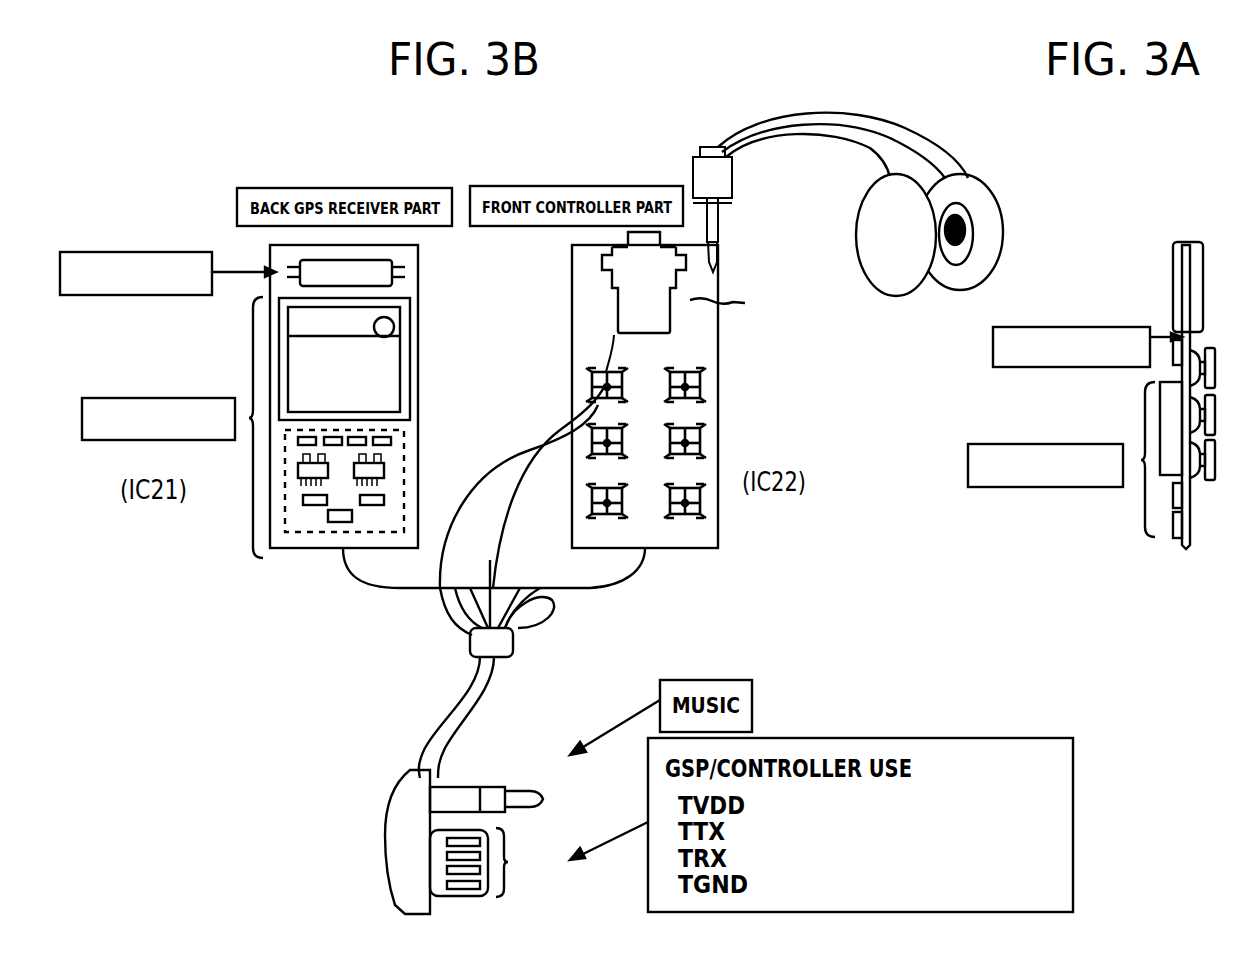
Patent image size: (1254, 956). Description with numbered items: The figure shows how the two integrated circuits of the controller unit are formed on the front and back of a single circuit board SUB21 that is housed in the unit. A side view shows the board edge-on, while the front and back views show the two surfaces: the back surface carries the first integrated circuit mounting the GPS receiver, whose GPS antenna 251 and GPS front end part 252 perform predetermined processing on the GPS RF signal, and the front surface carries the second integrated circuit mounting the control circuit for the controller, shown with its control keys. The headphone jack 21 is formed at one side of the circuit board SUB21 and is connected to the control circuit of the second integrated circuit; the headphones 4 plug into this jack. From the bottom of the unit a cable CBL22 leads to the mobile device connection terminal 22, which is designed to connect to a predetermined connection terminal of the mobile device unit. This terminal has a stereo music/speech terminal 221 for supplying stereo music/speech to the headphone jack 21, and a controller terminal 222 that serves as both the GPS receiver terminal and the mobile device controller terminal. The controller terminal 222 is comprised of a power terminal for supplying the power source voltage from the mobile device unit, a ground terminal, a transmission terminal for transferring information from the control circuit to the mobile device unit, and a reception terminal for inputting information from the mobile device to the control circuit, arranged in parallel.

In FIG. 3B, the headphones 4 is at (956, 296).
In FIG. 3B, the headphone jack 21 is at (677, 347).
In FIG. 3A, the headphone jack 21 is at (1173, 270).
In FIG. 3B, the mobile device connection terminal 22 is at (411, 826).
In FIG. 3B, the stereo music/speech terminal 221 is at (472, 787).
In FIG. 3B, the controller terminal 222 is at (495, 862).
In FIG. 3B, the GPS antenna 251 is at (138, 252).
In FIG. 3A, the GPS antenna 251 is at (1073, 327).
In FIG. 3B, the GPS front end part 252 is at (166, 400).
In FIG. 3A, the GPS front end part 252 is at (1047, 444).
In FIG. 3B, the circuit board SUB21 is at (312, 550).
In FIG. 3A, the circuit board SUB21 is at (1185, 552).
In FIG. 3B, the cable CBL22 is at (445, 702).